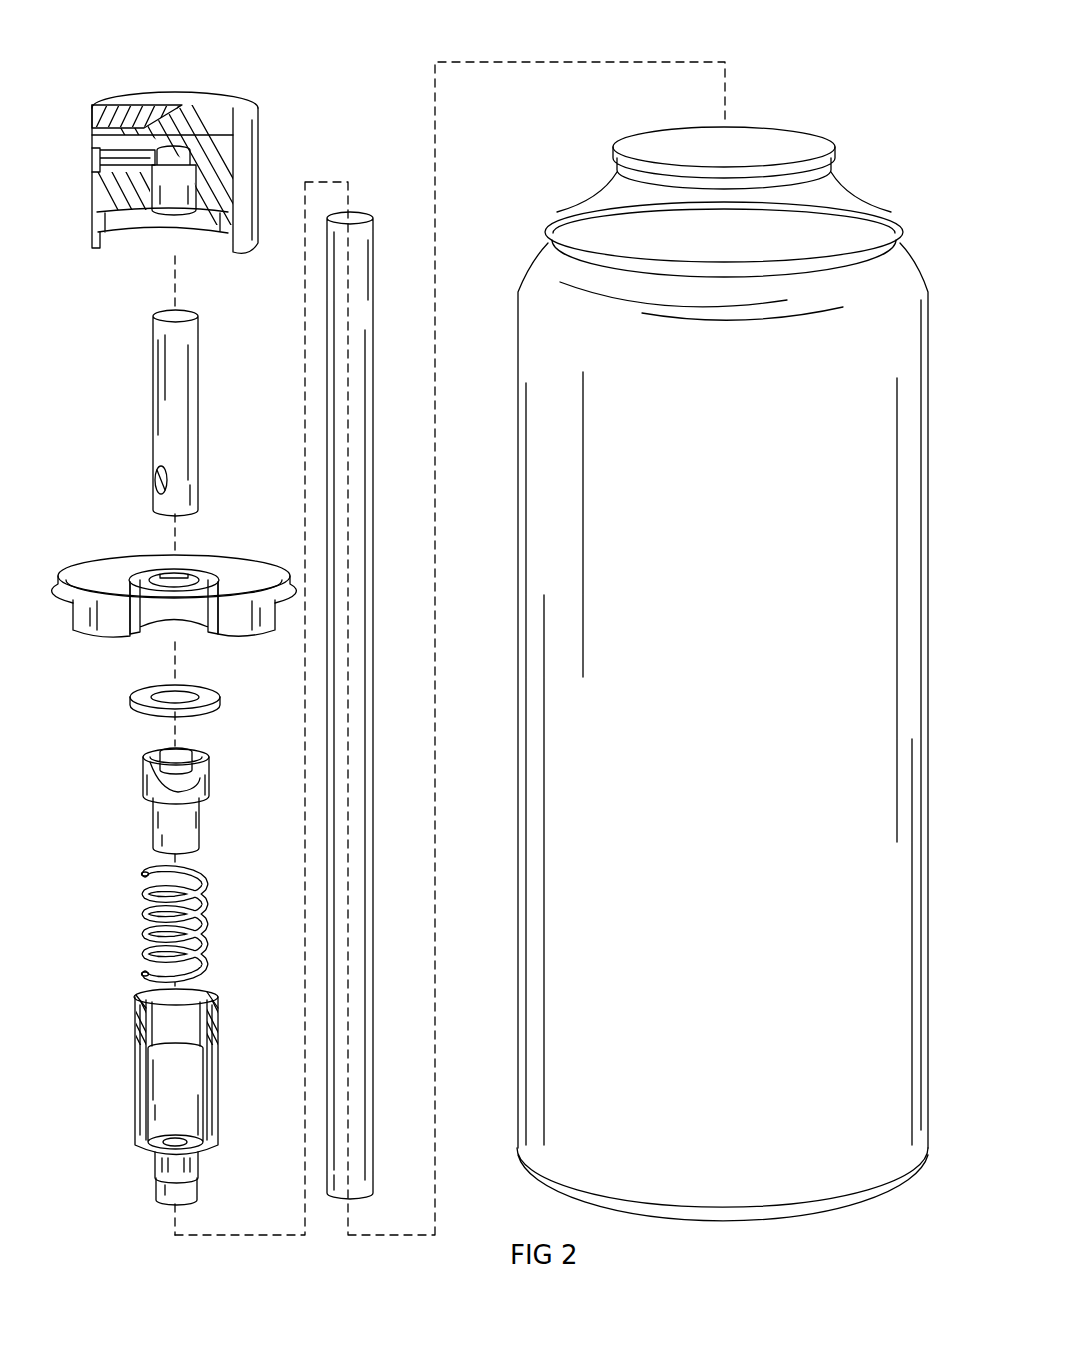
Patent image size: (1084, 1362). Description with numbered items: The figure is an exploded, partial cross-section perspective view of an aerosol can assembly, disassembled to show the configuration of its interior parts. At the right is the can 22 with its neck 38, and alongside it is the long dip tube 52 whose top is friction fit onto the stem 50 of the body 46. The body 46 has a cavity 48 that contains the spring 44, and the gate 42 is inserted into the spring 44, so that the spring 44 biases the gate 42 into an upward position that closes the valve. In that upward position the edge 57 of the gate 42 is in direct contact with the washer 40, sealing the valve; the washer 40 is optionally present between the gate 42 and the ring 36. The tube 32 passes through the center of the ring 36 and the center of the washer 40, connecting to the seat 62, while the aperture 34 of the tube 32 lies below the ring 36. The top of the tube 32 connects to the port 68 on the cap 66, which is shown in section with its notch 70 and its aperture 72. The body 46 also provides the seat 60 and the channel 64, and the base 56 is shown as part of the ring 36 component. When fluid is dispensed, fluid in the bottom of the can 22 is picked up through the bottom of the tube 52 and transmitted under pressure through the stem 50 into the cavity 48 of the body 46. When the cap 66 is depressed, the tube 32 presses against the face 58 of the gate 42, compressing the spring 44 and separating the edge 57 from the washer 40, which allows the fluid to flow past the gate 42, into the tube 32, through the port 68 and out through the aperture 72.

The can 22 is at (742, 674).
The tube 32 is at (177, 361).
The aperture 34 is at (158, 478).
The ring 36 is at (85, 622).
The neck 38 is at (828, 168).
The washer 40 is at (200, 707).
The gate 42 is at (167, 783).
The spring 44 is at (203, 893).
The body 46 is at (185, 1093).
The cavity 48 is at (178, 1092).
The stem 50 is at (190, 1192).
The tube 52 is at (343, 905).
The base 56 is at (233, 642).
The edge 57 is at (192, 760).
The face 58 is at (210, 783).
The seat 60 is at (185, 1005).
The seat 62 is at (157, 748).
The channel 64 is at (150, 992).
The cap 66 is at (181, 136).
The port 68 is at (178, 172).
The notch 70 is at (108, 103).
The aperture 72 is at (93, 158).